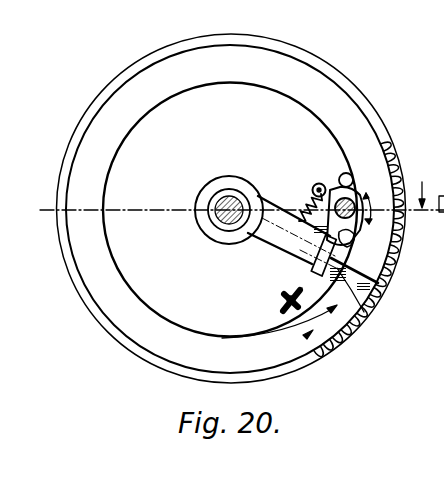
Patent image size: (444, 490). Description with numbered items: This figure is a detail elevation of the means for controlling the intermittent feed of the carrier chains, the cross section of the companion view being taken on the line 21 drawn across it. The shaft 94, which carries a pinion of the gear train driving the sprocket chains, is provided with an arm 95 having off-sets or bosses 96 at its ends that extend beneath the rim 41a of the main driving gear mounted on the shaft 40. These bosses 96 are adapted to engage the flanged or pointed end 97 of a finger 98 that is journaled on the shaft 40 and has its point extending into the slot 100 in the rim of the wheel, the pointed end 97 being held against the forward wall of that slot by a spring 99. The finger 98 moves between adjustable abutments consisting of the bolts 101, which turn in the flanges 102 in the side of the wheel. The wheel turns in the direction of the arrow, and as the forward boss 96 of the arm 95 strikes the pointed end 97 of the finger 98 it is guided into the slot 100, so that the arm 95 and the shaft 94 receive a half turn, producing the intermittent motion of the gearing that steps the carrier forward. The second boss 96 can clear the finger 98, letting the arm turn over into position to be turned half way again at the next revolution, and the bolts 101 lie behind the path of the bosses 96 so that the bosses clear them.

The section line 21 is at (231, 207).
The shaft 40 is at (222, 198).
The rim of the main driving gear 41a is at (327, 112).
The shaft 94 is at (392, 150).
The arm 95 is at (336, 176).
The off-sets or bosses 96 is at (356, 192).
The flanged or pointed end 97 is at (368, 317).
The finger 98 is at (264, 246).
The spring 99 is at (302, 213).
The slot 100 is at (385, 275).
The bolts 101 is at (303, 258).
The flanges 102 is at (339, 175).